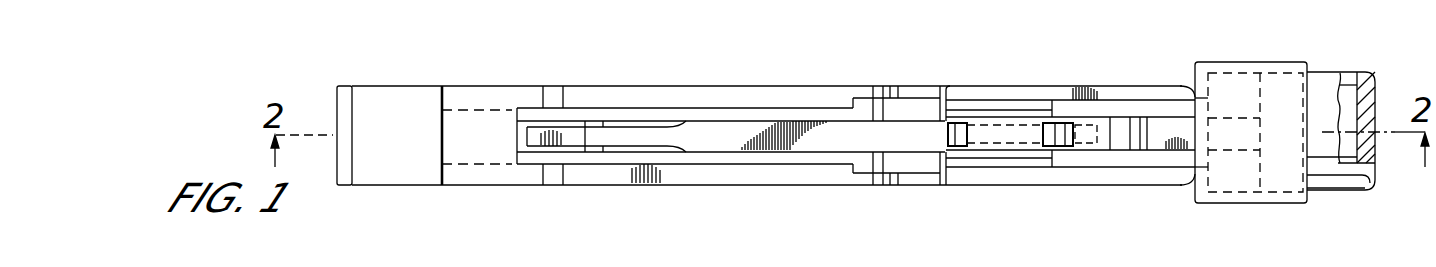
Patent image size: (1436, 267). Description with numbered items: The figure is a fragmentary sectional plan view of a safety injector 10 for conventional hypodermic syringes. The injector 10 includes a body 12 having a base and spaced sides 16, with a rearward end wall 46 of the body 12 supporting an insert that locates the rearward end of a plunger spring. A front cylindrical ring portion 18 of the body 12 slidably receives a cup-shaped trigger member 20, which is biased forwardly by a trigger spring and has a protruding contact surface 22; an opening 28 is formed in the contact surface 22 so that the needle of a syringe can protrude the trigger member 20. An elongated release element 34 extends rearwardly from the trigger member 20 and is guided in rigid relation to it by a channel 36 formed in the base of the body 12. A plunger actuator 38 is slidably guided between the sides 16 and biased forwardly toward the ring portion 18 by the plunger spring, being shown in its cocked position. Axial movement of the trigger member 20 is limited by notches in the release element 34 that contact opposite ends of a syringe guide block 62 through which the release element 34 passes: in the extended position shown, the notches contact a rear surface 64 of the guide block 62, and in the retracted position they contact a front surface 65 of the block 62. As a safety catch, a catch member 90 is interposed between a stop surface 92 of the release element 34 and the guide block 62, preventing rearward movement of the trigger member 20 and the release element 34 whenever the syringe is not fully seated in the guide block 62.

The injector 10 is at (428, 207).
The body 12 is at (645, 86).
The sides 16 is at (712, 86).
The front cylindrical ring portion 18 is at (1228, 62).
The trigger member 20 is at (1355, 45).
The contact surface 22 is at (1375, 165).
The opening 28 is at (1372, 105).
The release element 34 is at (652, 127).
The channel 36 is at (637, 121).
The plunger actuator 38 is at (496, 142).
The rearward end wall 46 is at (346, 86).
The syringe guide block 62 is at (945, 113).
The rear surface 64 is at (942, 167).
The front surface 65 is at (1053, 150).
The catch member 90 is at (1063, 124).
The stop surface 92 is at (1063, 146).